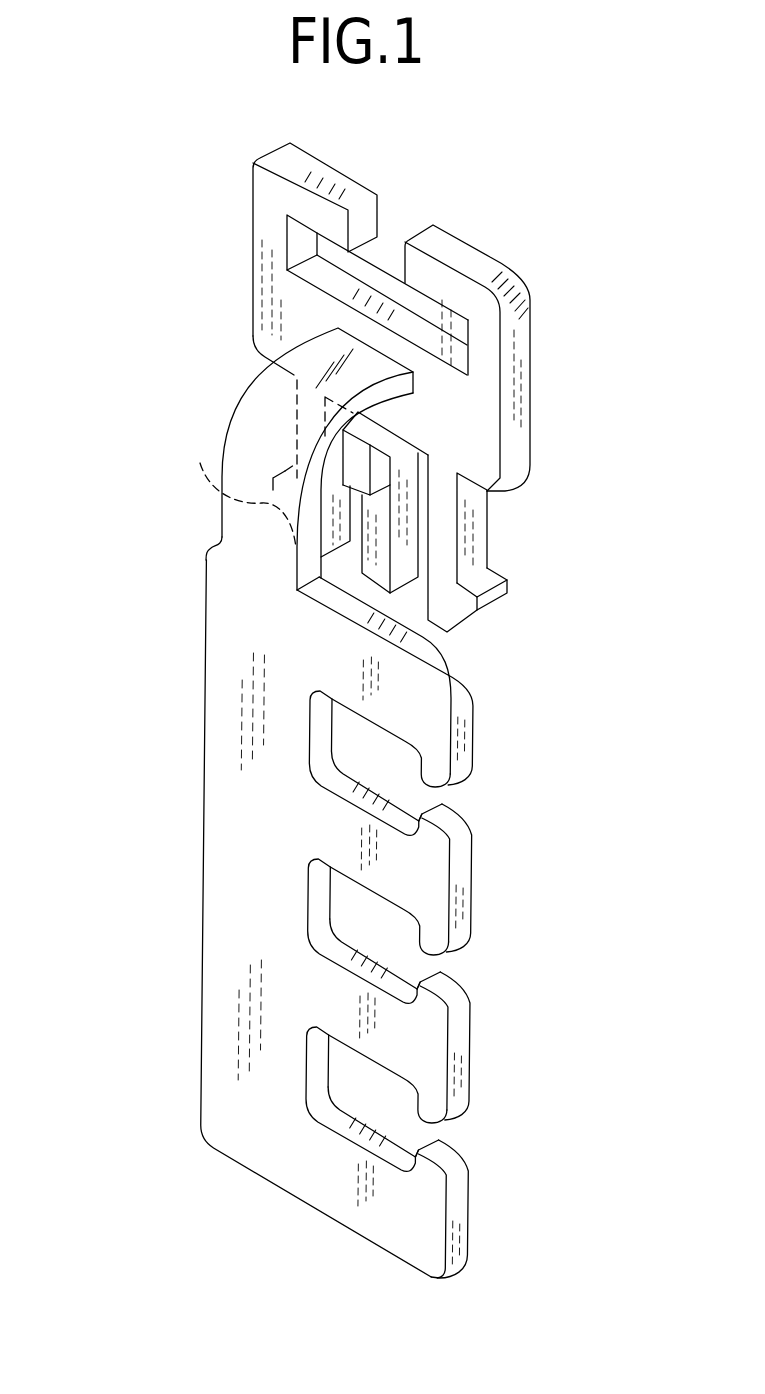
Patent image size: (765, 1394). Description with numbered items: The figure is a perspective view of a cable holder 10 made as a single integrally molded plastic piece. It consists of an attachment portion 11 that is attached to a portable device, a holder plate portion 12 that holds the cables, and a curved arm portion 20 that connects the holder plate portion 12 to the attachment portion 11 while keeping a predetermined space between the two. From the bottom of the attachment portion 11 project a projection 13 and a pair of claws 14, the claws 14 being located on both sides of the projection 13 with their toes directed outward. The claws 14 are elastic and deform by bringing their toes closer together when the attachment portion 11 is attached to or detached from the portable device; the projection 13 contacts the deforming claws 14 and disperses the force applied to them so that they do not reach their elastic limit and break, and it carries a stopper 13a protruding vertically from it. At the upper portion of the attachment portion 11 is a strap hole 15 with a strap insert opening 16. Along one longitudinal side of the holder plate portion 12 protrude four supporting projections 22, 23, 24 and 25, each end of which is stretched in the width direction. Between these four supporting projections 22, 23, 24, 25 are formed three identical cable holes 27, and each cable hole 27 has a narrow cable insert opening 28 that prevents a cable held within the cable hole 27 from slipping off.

The cable holder 10 is at (262, 1247).
The attachment portion 11 is at (252, 249).
The holder plate portion 12 is at (203, 666).
The projection 13 is at (373, 548).
The stopper 13a is at (355, 464).
The claws 14 is at (200, 463).
The strap hole 15 is at (340, 256).
The strap insert opening 16 is at (390, 245).
The arm portion 20 is at (279, 430).
The supporting projection 22 is at (413, 720).
The supporting projection 23 is at (428, 882).
The supporting projection 24 is at (427, 1047).
The supporting projection 25 is at (410, 1212).
The cable hole 27 is at (363, 763).
The cable insert opening 28 is at (435, 793).